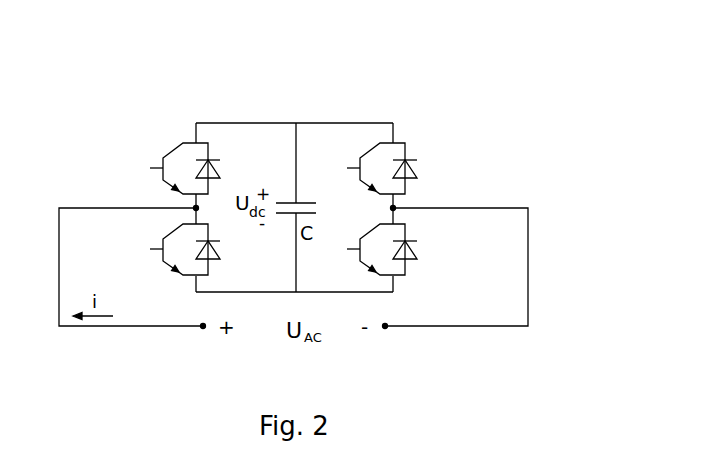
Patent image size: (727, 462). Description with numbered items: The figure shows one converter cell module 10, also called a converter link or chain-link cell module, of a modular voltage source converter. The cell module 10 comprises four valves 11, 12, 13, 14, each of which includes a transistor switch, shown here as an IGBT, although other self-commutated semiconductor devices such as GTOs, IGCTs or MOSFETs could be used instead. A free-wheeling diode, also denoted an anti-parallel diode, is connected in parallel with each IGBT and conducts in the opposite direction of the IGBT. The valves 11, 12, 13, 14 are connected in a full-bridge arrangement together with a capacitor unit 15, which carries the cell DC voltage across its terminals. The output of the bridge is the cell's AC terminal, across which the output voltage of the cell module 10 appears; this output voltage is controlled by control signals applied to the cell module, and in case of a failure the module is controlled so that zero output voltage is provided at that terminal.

The cell module 10 is at (417, 49).
The valve 11 is at (176, 153).
The valve 12 is at (400, 153).
The valve 13 is at (398, 268).
The valve 14 is at (187, 263).
The capacitor unit 15 is at (305, 195).